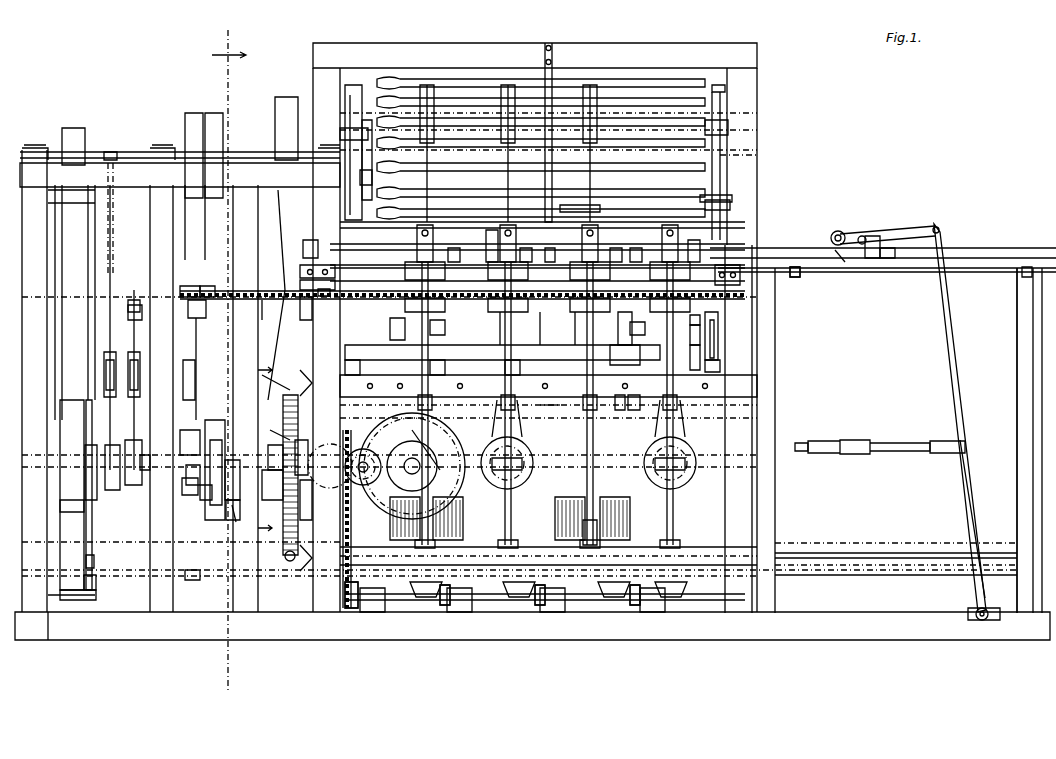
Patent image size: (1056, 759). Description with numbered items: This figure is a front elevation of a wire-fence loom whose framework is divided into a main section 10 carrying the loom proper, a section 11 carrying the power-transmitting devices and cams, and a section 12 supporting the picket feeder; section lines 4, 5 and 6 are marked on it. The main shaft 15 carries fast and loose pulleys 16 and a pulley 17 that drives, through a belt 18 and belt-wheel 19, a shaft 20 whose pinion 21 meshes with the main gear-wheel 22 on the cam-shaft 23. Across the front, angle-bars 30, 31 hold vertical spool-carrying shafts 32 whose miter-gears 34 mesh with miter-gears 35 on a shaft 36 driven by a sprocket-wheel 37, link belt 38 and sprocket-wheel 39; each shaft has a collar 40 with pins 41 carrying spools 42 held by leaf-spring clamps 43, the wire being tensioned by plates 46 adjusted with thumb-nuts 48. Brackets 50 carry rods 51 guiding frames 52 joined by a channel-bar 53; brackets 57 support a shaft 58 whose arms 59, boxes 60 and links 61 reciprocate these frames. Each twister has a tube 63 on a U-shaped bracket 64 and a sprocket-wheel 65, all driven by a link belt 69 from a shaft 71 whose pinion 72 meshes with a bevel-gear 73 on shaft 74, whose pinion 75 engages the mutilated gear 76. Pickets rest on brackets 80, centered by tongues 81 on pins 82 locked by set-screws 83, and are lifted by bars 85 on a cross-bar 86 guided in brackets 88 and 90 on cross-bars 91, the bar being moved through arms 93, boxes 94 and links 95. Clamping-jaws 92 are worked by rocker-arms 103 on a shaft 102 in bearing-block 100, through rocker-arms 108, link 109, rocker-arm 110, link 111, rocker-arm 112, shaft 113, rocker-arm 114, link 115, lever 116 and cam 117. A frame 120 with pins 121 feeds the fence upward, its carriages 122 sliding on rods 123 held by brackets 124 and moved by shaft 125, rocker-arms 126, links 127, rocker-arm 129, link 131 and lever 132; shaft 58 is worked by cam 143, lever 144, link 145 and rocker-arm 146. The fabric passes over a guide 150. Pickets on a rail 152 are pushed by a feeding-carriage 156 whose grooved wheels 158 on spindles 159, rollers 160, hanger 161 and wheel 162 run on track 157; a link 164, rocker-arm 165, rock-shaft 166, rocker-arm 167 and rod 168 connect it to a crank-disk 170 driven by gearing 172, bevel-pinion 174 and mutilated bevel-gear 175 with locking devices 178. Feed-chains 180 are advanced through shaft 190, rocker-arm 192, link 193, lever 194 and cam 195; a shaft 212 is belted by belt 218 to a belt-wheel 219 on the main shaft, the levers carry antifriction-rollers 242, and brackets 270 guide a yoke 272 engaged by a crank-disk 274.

The main or central frame section 10 is at (535, 37).
The section line 4 4 is at (227, 360).
The frame section 11 is at (140, 350).
The frame section 12 is at (997, 409).
The main shaft 15 is at (246, 158).
The fast and loose pulleys 16 is at (194, 128).
The pulley 17 is at (62, 136).
The belt 18 is at (80, 530).
The belt-wheel 19 is at (88, 592).
The horizontally-disposed shaft 20 is at (110, 546).
The pinion 21 is at (290, 561).
The main gear-wheel 22 is at (300, 528).
The main cam-shaft 23 is at (232, 480).
The angle-bars 30 is at (752, 380).
The angle-bars 31 is at (698, 560).
The spool-carrying shafts 32 is at (676, 528).
The miter-gear 34 is at (665, 598).
The miter-gears 35 is at (692, 606).
The horizontal shaft 36 is at (612, 605).
The sprocket-wheel 37 is at (352, 610).
The link belt 38 is at (351, 545).
The sprocket-wheel 39 is at (350, 452).
The collar 40 is at (596, 532).
The projecting pins 41 is at (600, 512).
The wire-carrying reels or spools 42 is at (628, 527).
The leaf-spring clamps 43 is at (455, 513).
The tension plates 46 is at (502, 352).
The thumb-nuts 48 is at (446, 367).
The brackets 50 is at (720, 366).
The vertical rod 51 is at (716, 350).
The vertically-movable frame 52 is at (718, 330).
The channel-bar 53 is at (534, 328).
The brackets 57 is at (345, 368).
The shaft 58 is at (134, 292).
The arms 59 is at (684, 326).
The adjustable boxes 60 is at (684, 340).
The links 61 is at (684, 357).
The twister-tube 63 is at (495, 262).
The U-shaped bracket 64 is at (571, 328).
The sprocket-wheel 65 is at (490, 328).
The link belt 69 is at (271, 310).
The shaft 71 is at (196, 352).
The beveled pinion 72 is at (180, 446).
The bevel-gear 73 is at (205, 486).
The shaft 74 is at (199, 477).
The pinion 75 is at (268, 455).
The mutilated gear 76 is at (271, 495).
The brackets 80 is at (449, 246).
The plates or tongues 81 is at (681, 243).
The pins 82 is at (545, 246).
The set-screws 83 is at (633, 246).
The picket-raising bars 85 is at (634, 410).
The cross-bar 86 is at (521, 367).
The brackets 88 is at (618, 410).
The brackets 90 is at (576, 243).
The upper fixed cross-bars 91 is at (712, 282).
The clamping-jaws 92 is at (612, 246).
The forwardly-extending arms 93 is at (613, 328).
The boxes 94 is at (643, 331).
The links 95 is at (618, 355).
The bearing-block 100 is at (418, 245).
The shaft 102 is at (526, 244).
The rocker-arms 103 is at (500, 240).
The rocker-arms 108 is at (300, 271).
The link 109 is at (300, 284).
The rocker-arm 110 is at (303, 247).
The link 111 is at (310, 286).
The rocker-arm 112 is at (308, 309).
The shaft 113 is at (208, 312).
The rocker-arm 114 is at (190, 281).
The adjustable link 115 is at (192, 342).
The lever 116 is at (209, 472).
The cam 117 is at (228, 496).
The vertically-movable frame 120 is at (732, 200).
The pins 121 is at (592, 205).
The carriages 122 is at (728, 135).
The rods 123 is at (722, 103).
The brackets 124 is at (730, 88).
The shaft 125 is at (750, 156).
The rocker-arms 126 is at (368, 178).
The links 127 is at (372, 146).
The rocker-arm 129 is at (110, 152).
The adjustable link 131 is at (113, 221).
The lever 132 is at (110, 440).
The cam 143 is at (126, 475).
The lever 144 is at (147, 440).
The adjustable link 145 is at (138, 352).
The rocker-arm 146 is at (140, 312).
The revoluble guide 150 is at (665, 92).
The rail 152 is at (785, 250).
The feeding-carriage 156 is at (862, 240).
The track 157 is at (972, 250).
The grooved wheels 158 is at (834, 235).
The spindles 159 is at (842, 262).
The smooth rollers 160 is at (880, 232).
The hanger 161 is at (883, 258).
The small wheel 162 is at (868, 258).
The pivoted arm or link 164 is at (934, 228).
The rocker-arm 165 is at (952, 376).
The rock-shaft 166 is at (982, 622).
The rocker-arm 167 is at (972, 480).
The adjustable rod 168 is at (810, 441).
The crank-disk 170 is at (346, 369).
The train of gearing 172 is at (404, 449).
The bevel-pinion 174 is at (305, 443).
The mutilated bevel-gear 175 is at (303, 503).
The locking devices 178 is at (270, 433).
The endless feed-chains 180 is at (1022, 277).
The shaft 190 is at (188, 579).
The rocker-arm 192 is at (96, 583).
The link 193 is at (94, 560).
The lever 194 is at (98, 444).
The cam 195 is at (92, 478).
The shaft 212 is at (552, 413).
The belt 218 is at (283, 345).
The belt-wheel 219 is at (278, 205).
The antifriction-roller 242 is at (150, 468).
The brackets 270 is at (230, 498).
The yoke 272 is at (220, 420).
The crank-disk 274 is at (246, 517).
The section line 5 5 is at (306, 470).
The section line 6 6 is at (265, 447).